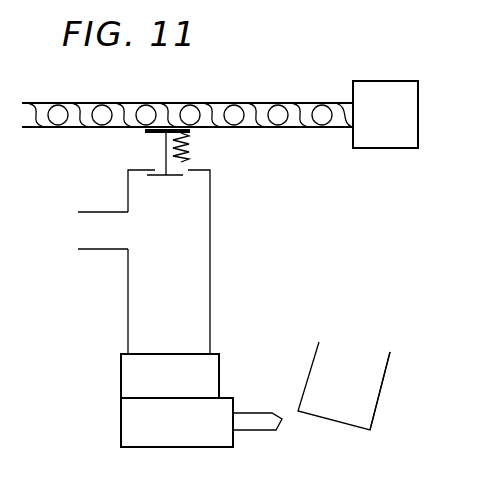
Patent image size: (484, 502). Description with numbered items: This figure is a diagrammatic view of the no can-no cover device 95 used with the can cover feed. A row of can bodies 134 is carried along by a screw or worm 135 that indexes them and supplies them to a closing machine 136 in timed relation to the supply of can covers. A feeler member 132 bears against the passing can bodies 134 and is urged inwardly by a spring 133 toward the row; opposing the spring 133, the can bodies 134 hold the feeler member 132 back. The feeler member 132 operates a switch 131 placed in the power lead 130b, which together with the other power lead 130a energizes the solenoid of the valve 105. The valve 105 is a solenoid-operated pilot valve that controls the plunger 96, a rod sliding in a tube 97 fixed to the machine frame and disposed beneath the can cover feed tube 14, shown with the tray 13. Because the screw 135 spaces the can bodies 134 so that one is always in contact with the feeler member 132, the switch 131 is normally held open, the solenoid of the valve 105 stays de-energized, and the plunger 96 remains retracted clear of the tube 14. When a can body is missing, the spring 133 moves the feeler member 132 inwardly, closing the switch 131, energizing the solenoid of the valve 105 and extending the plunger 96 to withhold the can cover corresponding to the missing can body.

The tray 13 is at (340, 425).
The can cover feed tube 14 is at (383, 383).
The no can-no cover device 95 is at (118, 426).
The plunger 96 is at (263, 430).
The tube 97 is at (160, 448).
The valve 105 is at (118, 378).
The power lead 130a is at (93, 249).
The power lead 130b is at (107, 211).
The switch 131 is at (168, 176).
The feeler member 132 is at (156, 134).
The spring 133 is at (190, 156).
The can bodies 134 is at (104, 103).
The screw or worm 135 is at (187, 103).
The closing machine 136 is at (418, 107).